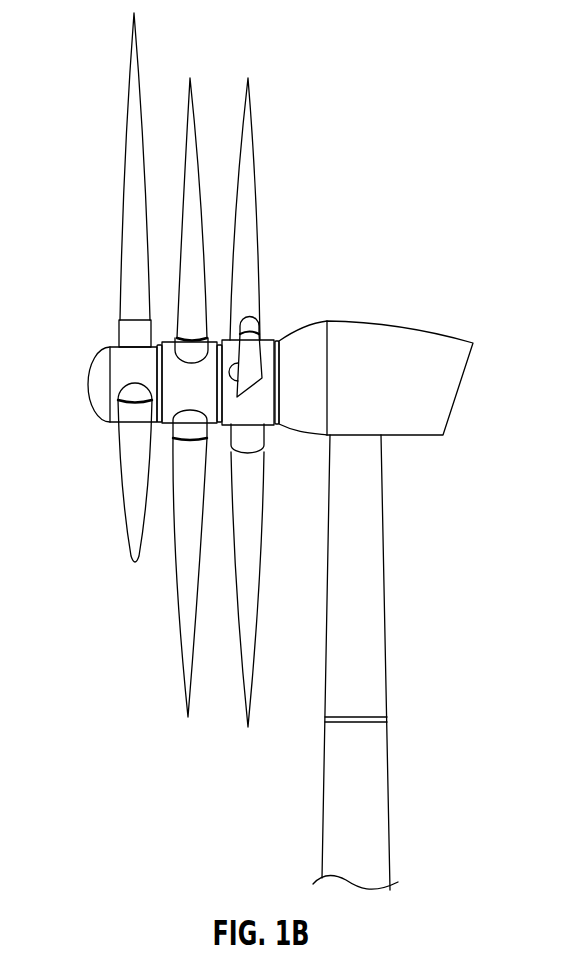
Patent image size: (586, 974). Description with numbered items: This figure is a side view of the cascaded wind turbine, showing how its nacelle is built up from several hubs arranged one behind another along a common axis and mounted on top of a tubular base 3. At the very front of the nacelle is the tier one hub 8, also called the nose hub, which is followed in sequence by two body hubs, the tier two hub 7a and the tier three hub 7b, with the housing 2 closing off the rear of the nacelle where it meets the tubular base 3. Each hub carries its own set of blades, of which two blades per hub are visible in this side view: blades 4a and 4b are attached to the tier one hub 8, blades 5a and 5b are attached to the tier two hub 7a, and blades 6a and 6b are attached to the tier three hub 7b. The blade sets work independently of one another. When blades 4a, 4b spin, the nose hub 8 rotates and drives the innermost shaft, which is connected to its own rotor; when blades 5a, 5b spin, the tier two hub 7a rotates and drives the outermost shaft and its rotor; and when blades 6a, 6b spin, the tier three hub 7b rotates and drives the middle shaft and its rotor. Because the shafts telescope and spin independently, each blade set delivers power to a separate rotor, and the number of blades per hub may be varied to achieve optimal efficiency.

The housing 2 is at (454, 358).
The tubular base 3 is at (370, 824).
The rotor blade 4a is at (118, 202).
The rotor blade 4b is at (126, 471).
The rotor blade 5a is at (202, 182).
The rotor blade 5b is at (181, 646).
The rotor blade 6a is at (262, 201).
The rotor blade 6b is at (246, 720).
The tier two hub 7a is at (177, 397).
The tier three hub 7b is at (266, 339).
The tier one hub 8 is at (86, 380).